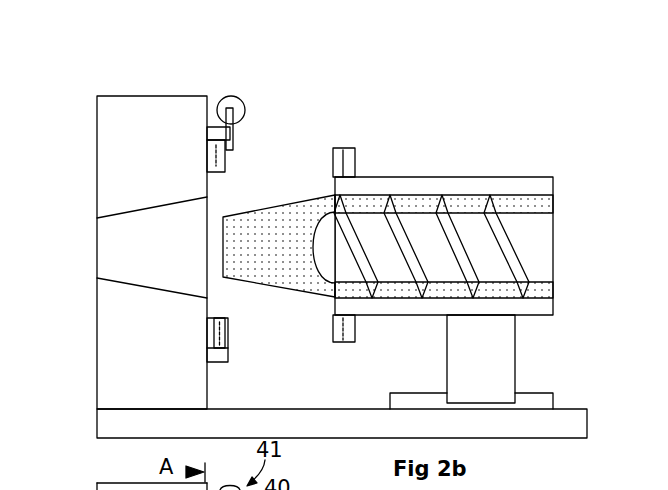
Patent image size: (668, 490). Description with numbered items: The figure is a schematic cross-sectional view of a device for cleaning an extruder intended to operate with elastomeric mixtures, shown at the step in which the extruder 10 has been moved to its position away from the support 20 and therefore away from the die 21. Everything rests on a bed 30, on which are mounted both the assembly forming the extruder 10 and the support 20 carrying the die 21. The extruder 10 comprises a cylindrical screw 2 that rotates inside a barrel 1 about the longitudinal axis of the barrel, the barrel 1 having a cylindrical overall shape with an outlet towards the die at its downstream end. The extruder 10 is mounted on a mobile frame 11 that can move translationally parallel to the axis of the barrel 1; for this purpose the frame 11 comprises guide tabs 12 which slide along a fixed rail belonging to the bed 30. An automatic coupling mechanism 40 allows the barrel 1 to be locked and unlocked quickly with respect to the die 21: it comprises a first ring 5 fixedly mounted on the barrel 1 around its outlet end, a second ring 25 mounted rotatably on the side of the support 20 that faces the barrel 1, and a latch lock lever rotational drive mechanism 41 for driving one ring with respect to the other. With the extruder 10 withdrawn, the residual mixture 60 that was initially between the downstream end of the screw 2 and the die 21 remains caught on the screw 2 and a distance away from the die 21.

The barrel 1 is at (527, 182).
The screw 2 is at (548, 246).
The first ring 5 is at (353, 147).
The extruder 10 is at (475, 242).
The mobile frame 11 is at (495, 358).
The guide tabs 12 is at (538, 402).
The support 20 is at (158, 95).
The die 21 is at (105, 278).
The second ring 25 is at (207, 347).
The bed 30 is at (572, 435).
The automatic coupling mechanism 40 is at (262, 107).
The latch lock lever rotational drive mechanism 41 is at (241, 83).
The residual mixture 60 is at (289, 235).